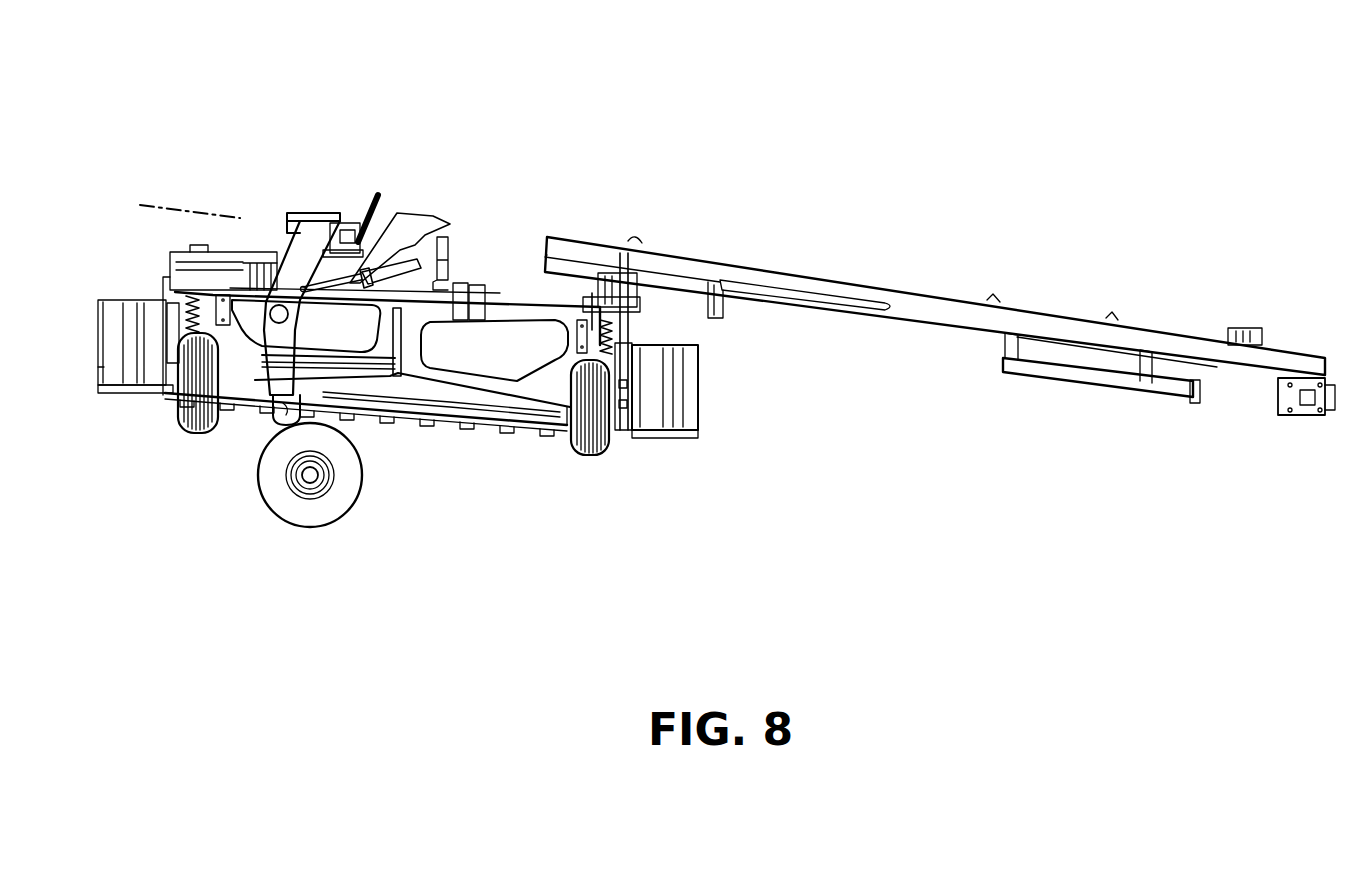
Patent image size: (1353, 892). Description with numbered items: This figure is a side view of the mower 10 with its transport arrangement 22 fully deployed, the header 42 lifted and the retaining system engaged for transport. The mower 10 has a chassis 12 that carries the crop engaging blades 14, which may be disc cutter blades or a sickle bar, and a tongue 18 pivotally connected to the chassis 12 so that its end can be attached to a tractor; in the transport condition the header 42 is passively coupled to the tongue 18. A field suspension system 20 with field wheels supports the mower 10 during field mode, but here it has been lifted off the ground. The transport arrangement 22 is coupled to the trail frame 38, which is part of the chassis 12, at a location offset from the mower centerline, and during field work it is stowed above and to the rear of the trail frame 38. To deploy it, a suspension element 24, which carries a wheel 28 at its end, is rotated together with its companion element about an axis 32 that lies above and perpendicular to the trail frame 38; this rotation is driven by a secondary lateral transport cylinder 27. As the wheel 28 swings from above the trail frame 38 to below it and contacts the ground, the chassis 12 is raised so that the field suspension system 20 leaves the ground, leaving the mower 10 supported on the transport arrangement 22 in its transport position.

The mower 10 is at (716, 299).
The chassis 12 is at (708, 412).
The crop engaging blades 14 is at (425, 420).
The tongue 18 is at (928, 290).
The field suspension system 20 is at (178, 447).
The transport arrangement 22 is at (330, 195).
The suspension element 24 is at (268, 413).
The secondary lateral transport cylinder 27 is at (372, 268).
The wheel 28 is at (340, 503).
The axis 32 is at (186, 208).
The trail frame 38 is at (475, 257).
The header 42 is at (700, 373).